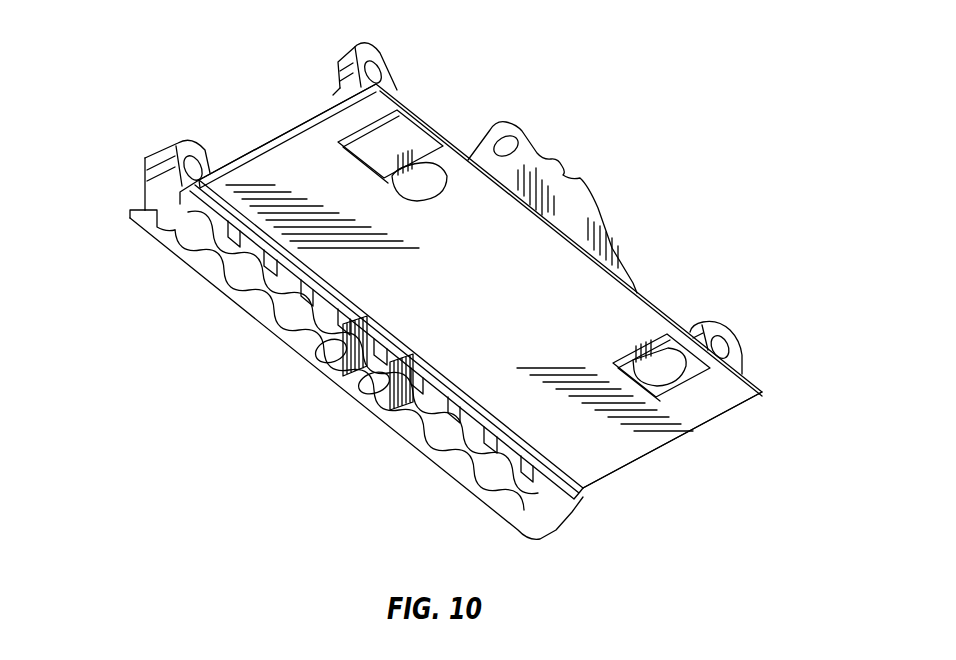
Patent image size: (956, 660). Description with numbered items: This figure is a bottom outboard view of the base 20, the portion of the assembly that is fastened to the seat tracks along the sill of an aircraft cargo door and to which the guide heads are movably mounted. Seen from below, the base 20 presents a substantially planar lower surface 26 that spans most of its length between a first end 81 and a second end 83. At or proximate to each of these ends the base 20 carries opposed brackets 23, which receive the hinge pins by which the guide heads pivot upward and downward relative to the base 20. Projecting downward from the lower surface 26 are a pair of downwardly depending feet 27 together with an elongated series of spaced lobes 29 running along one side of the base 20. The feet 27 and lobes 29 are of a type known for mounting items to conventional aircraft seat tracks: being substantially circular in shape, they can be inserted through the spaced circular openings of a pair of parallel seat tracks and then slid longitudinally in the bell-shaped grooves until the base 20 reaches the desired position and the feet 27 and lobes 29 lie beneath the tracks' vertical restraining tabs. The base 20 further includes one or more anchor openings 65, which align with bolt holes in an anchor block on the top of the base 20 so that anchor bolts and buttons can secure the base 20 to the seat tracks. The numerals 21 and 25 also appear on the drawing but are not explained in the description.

The base 20 is at (618, 128).
The mounting boss 21 is at (346, 54).
The brackets 23 is at (725, 338).
The mounting lug 25 is at (600, 212).
The lower surface 26 is at (512, 321).
The feet 27 is at (423, 182).
The spaced lobes 29 is at (490, 487).
The anchor openings 65 is at (374, 392).
The first end 81 is at (267, 141).
The second end 83 is at (641, 458).